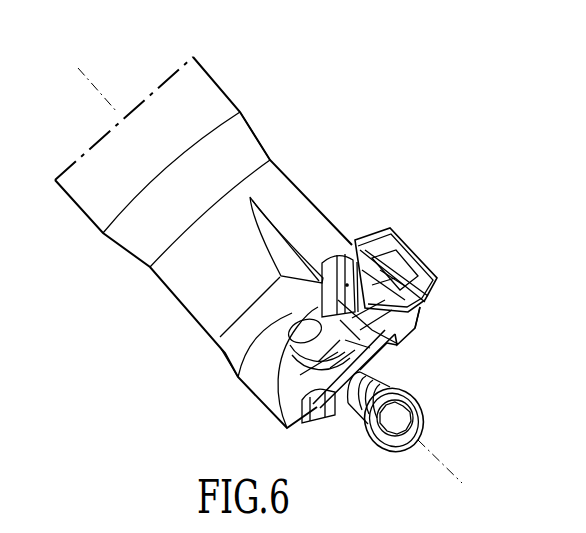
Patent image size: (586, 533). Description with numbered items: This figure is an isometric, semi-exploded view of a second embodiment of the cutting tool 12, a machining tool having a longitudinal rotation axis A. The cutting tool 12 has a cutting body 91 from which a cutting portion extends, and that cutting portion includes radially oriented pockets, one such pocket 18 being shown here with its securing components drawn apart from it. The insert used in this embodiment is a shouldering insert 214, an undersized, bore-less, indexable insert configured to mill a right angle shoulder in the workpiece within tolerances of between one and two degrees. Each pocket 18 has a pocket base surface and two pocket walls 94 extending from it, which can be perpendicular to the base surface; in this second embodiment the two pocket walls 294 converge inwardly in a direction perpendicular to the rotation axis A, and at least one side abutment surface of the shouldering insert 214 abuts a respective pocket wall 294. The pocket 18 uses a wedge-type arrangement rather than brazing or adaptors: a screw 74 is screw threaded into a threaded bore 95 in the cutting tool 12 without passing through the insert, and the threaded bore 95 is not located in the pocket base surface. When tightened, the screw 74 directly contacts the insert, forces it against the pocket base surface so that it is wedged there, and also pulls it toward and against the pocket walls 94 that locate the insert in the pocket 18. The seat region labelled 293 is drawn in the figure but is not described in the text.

The longitudinal rotation axis A is at (87, 78).
The cutting tool 12 is at (524, 138).
The cutting body 91 is at (280, 164).
The pocket walls 294 is at (330, 262).
The shouldering insert 214 is at (446, 254).
The insert seat 293 is at (415, 328).
The pocket 18 is at (398, 347).
The pocket walls 94 is at (385, 355).
The threaded bore 95 is at (232, 362).
The screw 74 is at (388, 452).